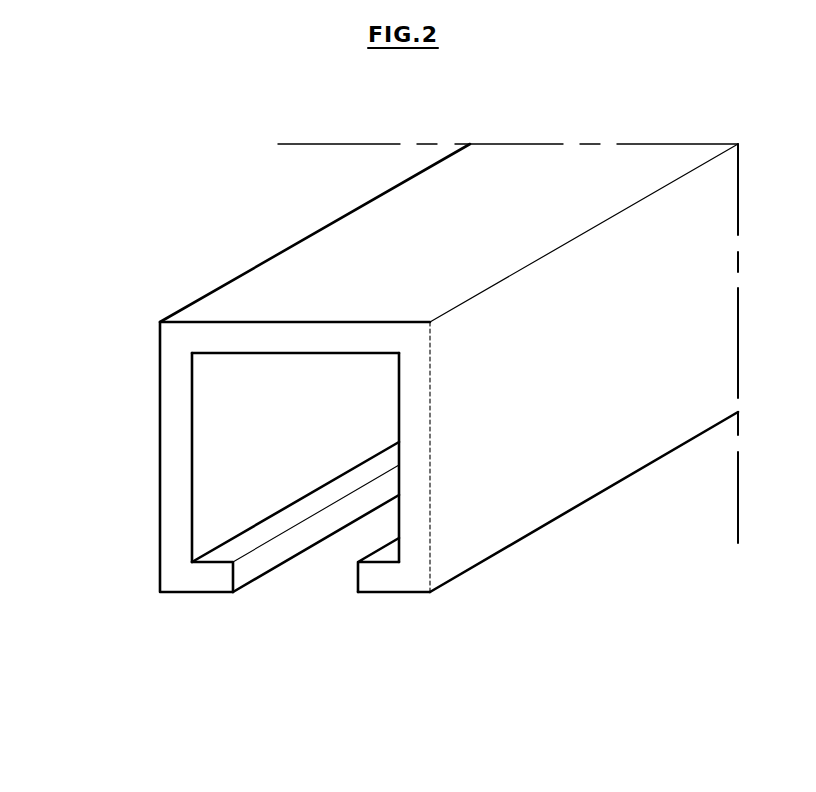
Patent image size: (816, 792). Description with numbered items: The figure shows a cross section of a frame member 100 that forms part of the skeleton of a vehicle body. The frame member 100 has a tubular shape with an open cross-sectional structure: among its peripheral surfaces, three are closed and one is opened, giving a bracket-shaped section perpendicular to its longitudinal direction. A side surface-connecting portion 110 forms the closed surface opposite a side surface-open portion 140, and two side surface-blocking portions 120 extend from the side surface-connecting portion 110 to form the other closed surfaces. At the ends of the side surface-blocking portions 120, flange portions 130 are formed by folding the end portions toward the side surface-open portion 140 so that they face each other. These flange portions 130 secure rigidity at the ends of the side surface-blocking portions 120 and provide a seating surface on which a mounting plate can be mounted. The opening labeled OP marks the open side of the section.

The frame member 100 is at (288, 247).
The side surface-connecting portion 110 is at (247, 297).
The side surface-blocking portion 120 is at (182, 455).
The flange portion 130 is at (203, 578).
The side surface-open portion 140 is at (291, 574).
The opening OP is at (312, 446).